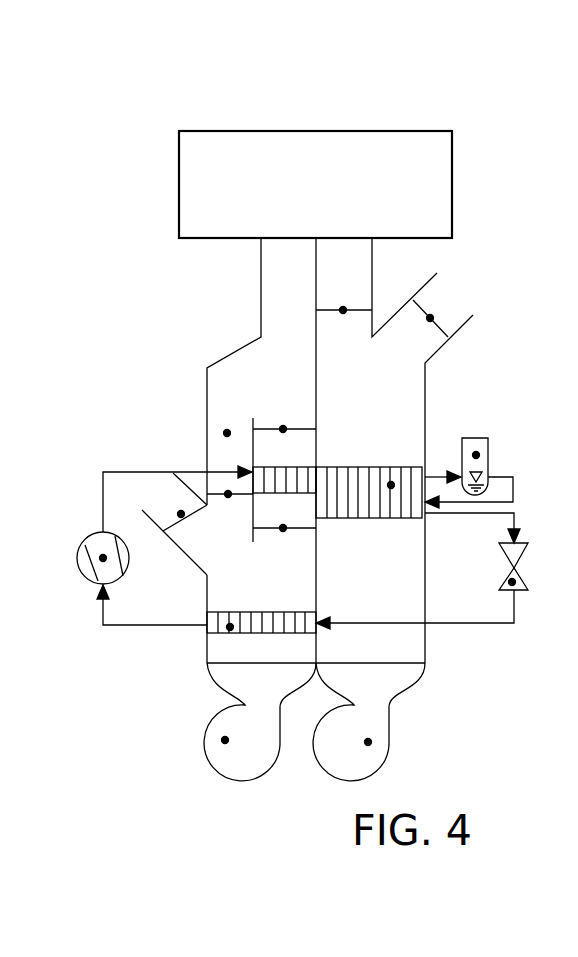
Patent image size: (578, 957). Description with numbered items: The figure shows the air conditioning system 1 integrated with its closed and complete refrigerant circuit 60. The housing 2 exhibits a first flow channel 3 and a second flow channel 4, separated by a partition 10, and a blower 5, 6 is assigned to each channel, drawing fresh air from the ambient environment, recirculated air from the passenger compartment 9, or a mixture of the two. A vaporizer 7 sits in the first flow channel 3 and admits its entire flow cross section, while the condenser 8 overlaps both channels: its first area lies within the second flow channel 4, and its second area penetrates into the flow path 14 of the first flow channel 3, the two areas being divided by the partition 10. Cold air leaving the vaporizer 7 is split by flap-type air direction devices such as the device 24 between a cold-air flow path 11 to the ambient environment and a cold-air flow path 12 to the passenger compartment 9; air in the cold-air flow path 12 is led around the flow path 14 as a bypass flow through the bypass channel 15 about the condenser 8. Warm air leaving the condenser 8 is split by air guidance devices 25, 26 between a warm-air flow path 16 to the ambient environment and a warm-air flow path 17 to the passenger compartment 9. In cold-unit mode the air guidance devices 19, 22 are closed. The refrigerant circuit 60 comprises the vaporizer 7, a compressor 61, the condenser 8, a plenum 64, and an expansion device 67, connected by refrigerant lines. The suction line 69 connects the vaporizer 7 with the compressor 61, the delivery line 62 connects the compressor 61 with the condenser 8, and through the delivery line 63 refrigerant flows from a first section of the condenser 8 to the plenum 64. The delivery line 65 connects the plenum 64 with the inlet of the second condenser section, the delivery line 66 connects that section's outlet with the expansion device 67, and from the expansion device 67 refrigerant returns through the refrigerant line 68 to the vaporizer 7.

The air conditioning system 1 is at (489, 127).
The housing 2 is at (261, 302).
The first flow channel 3 is at (198, 350).
The second flow channel 4 is at (452, 376).
The blower 5 is at (225, 740).
The blower 6 is at (368, 742).
The vaporizer 7 is at (230, 627).
The condenser 8 is at (391, 485).
The passenger compartment 9 is at (309, 191).
The partition 10 is at (316, 588).
The cold-air flow path 11 is at (170, 505).
The cold-air flow path 12 is at (274, 316).
The flow path 14 is at (298, 461).
The bypass channel 15 is at (227, 433).
The warm-air flow path 16 is at (438, 309).
The warm-air flow path 17 is at (356, 287).
The air guidance device 19 is at (267, 532).
The air guidance device 22 is at (268, 428).
The air direction device 24 is at (228, 496).
The air guidance device 25 is at (413, 300).
The air guidance device 26 is at (343, 313).
The refrigerant circuit 60 is at (114, 446).
The compressor 61 is at (103, 558).
The delivery line 62 is at (187, 471).
The delivery line 63 is at (438, 473).
The plenum 64 is at (476, 455).
The delivery line 65 is at (513, 488).
The delivery line 66 is at (515, 520).
The expansion device 67 is at (512, 582).
The refrigerant line 68 is at (473, 625).
The suction line 69 is at (128, 626).